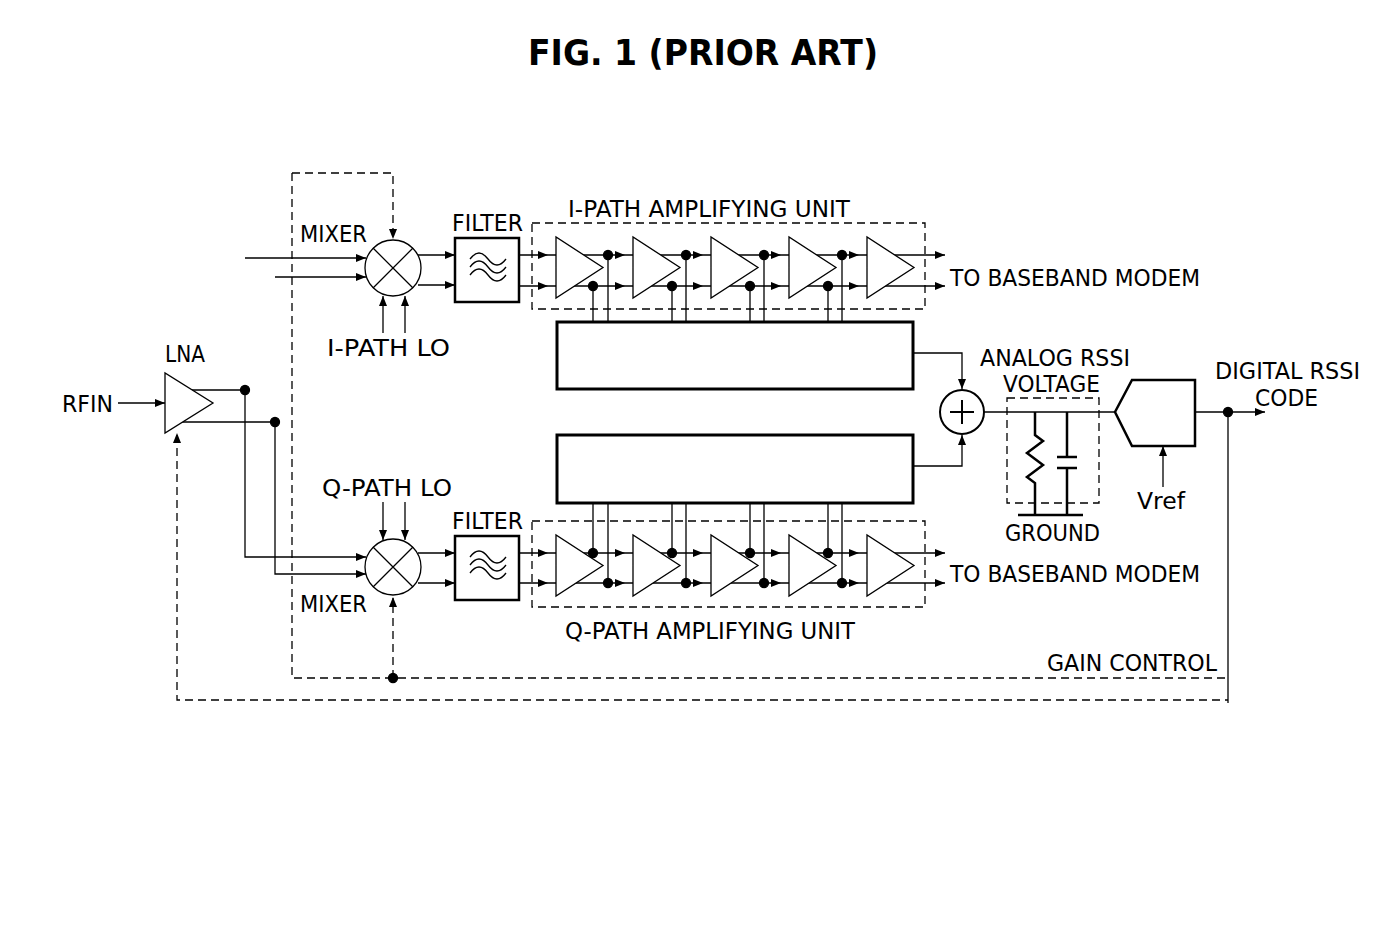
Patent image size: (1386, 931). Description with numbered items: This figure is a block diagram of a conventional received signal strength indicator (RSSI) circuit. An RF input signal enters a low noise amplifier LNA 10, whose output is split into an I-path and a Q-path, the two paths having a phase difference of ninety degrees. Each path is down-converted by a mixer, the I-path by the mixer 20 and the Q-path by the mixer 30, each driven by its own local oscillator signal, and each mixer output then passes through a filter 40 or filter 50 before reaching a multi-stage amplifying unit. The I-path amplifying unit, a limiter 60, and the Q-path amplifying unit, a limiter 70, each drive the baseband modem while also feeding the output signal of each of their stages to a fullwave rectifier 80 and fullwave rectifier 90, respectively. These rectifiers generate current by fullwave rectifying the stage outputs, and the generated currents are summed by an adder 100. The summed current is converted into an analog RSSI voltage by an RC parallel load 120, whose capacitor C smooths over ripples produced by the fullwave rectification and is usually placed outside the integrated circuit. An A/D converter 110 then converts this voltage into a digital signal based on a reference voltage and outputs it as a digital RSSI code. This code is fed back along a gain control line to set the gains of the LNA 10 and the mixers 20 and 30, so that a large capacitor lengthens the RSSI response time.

The low noise amplifier LNA 10 is at (167, 426).
The mixer 20 is at (409, 237).
The mixer 30 is at (401, 597).
The I-path filter 40 is at (480, 302).
The Q-path filter 50 is at (485, 600).
The limiter 60 is at (887, 224).
The limiter 70 is at (890, 608).
The fullwave rectifier 80 is at (557, 353).
The fullwave rectifier 90 is at (557, 466).
The adder 100 is at (975, 389).
The A/D converter 110 is at (1163, 380).
The RC parallel load 120 is at (1007, 497).